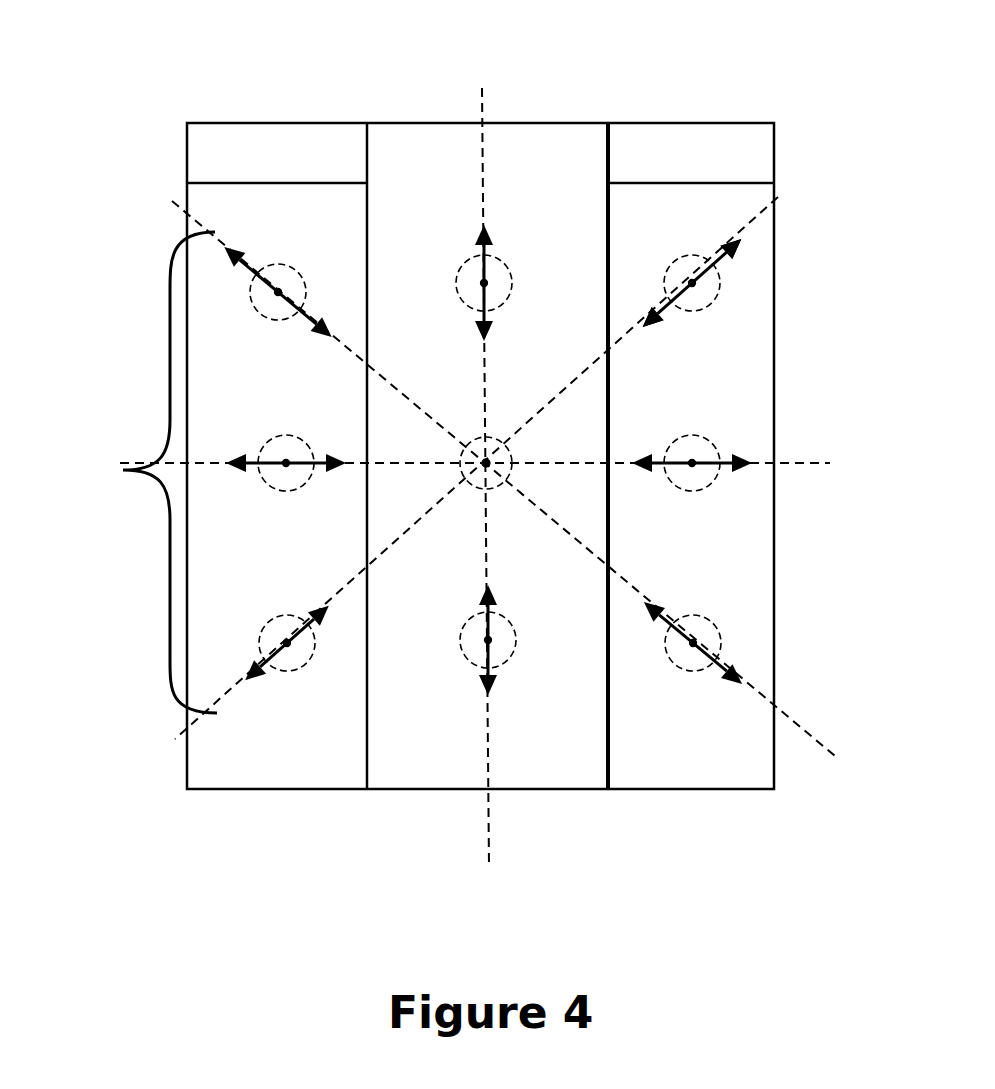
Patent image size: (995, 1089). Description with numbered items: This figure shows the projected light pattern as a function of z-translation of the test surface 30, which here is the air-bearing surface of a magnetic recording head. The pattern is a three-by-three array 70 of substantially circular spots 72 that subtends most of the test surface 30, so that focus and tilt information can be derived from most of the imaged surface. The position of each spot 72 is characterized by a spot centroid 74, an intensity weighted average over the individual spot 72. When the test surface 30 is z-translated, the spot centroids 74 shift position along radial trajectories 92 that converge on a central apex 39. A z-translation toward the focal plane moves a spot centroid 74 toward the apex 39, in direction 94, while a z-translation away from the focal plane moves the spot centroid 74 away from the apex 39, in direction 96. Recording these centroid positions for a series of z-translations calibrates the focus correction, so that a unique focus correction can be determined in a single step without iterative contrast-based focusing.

The test surface 30 is at (287, 203).
The apex 39 is at (486, 462).
The array of light spots 70 is at (118, 466).
The spot 72 is at (248, 300).
The spot centroid 74 is at (692, 283).
The radial trajectory 92 is at (737, 237).
The direction toward apex 94 is at (640, 322).
The direction away from apex 96 is at (740, 245).